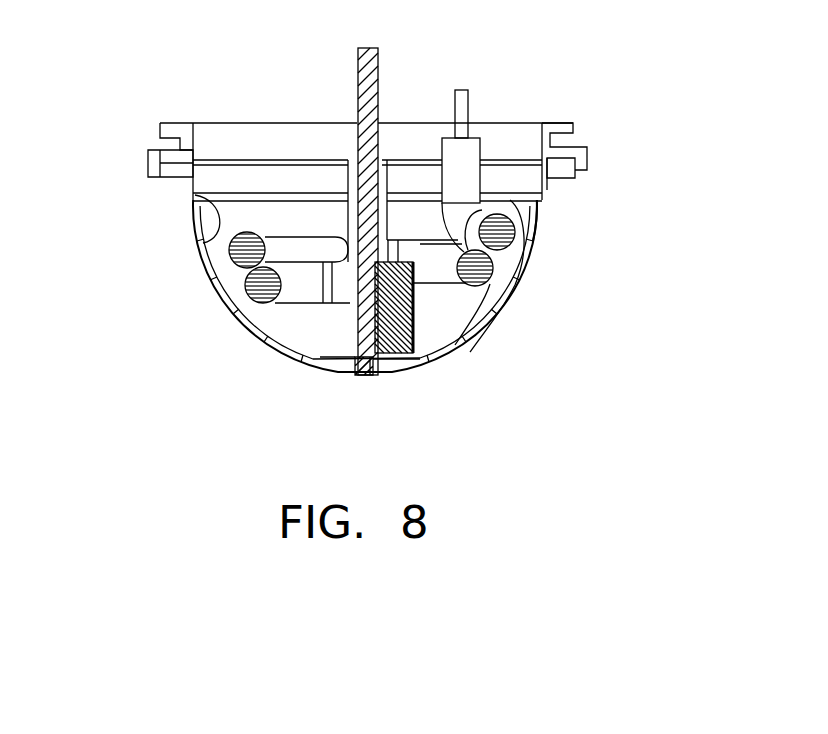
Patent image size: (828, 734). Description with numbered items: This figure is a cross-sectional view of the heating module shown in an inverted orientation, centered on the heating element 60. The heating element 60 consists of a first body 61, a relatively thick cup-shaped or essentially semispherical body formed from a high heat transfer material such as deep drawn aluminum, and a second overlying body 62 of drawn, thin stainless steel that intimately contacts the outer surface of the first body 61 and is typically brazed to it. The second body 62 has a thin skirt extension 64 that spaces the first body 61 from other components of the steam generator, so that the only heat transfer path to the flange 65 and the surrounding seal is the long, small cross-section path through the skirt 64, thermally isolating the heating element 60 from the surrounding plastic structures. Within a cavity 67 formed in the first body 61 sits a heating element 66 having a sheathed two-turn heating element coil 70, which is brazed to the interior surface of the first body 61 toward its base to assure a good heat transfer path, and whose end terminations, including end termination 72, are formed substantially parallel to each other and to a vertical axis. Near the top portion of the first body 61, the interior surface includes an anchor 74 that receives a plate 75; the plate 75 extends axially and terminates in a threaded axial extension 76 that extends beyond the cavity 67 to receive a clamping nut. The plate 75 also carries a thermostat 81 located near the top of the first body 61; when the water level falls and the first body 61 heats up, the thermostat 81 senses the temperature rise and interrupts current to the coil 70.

The heating element 60 is at (557, 282).
The first body 61 is at (194, 192).
The second overlying body 62 is at (530, 263).
The skirt extension 64 is at (552, 186).
The flange 65 is at (168, 152).
The heating element 66 is at (490, 214).
The cavity 67 is at (248, 218).
The two-turn heating element coil 70 is at (478, 288).
The end termination 72 is at (452, 152).
The anchor 74 is at (363, 376).
The plate 75 is at (373, 376).
The threaded axial extension 76 is at (357, 68).
The thermostat 81 is at (410, 332).